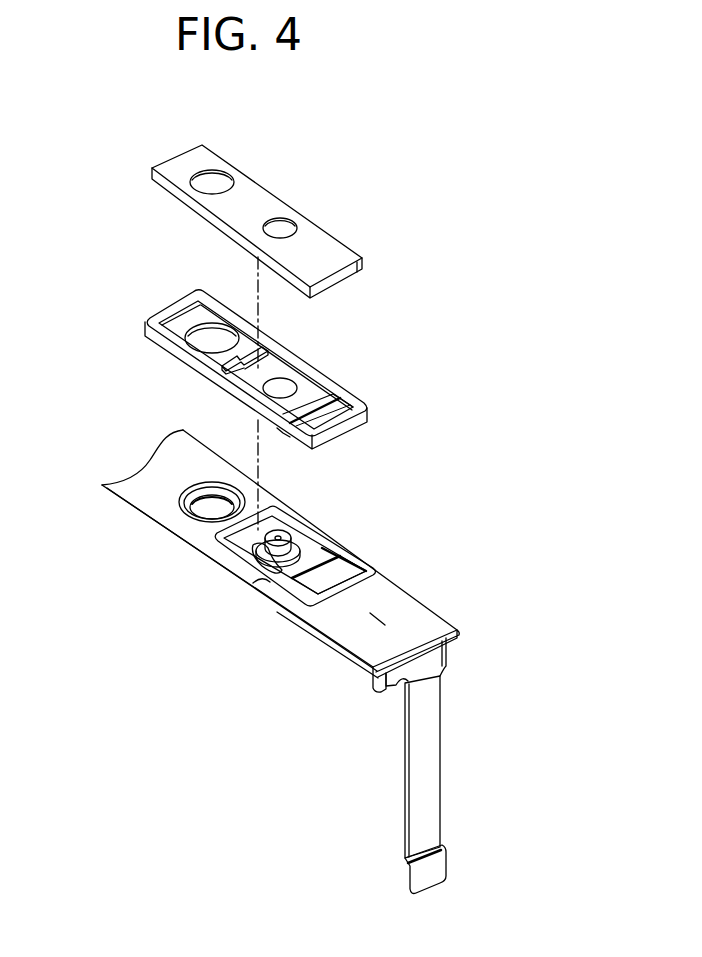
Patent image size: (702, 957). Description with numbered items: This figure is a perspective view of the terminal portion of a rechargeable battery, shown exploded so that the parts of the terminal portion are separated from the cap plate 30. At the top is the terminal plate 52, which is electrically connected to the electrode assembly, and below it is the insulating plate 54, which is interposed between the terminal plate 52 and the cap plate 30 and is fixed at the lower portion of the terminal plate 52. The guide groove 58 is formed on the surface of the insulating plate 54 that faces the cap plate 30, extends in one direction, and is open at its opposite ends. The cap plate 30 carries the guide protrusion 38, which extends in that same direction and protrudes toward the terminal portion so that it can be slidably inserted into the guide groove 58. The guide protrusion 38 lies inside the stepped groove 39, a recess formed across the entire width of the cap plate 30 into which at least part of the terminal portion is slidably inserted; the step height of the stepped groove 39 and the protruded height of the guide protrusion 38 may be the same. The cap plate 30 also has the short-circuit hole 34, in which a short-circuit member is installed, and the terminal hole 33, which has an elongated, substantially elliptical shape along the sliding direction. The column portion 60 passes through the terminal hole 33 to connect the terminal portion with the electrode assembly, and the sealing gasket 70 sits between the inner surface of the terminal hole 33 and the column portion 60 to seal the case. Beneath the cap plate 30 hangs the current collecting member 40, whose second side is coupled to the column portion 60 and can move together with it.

The cap plate 30 is at (297, 561).
The terminal hole 33 is at (253, 583).
The short-circuit hole 34 is at (176, 509).
The guide protrusion 38 is at (318, 570).
The stepped groove 39 is at (352, 578).
The current collecting member 40 is at (442, 764).
The terminal plate 52 is at (258, 197).
The insulating plate 54 is at (266, 369).
The guide groove 58 is at (335, 406).
The column portion 60 is at (281, 538).
The sealing gasket 70 is at (253, 546).